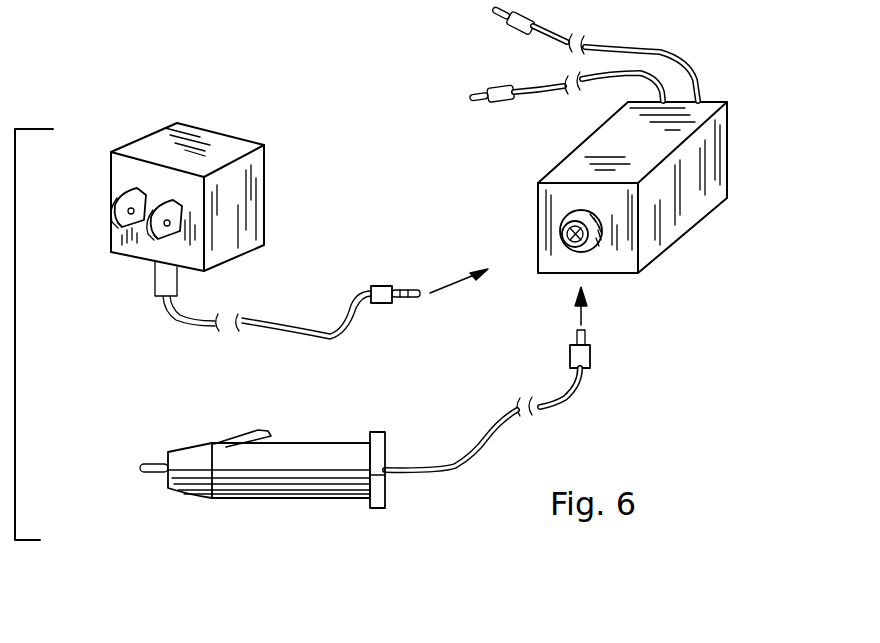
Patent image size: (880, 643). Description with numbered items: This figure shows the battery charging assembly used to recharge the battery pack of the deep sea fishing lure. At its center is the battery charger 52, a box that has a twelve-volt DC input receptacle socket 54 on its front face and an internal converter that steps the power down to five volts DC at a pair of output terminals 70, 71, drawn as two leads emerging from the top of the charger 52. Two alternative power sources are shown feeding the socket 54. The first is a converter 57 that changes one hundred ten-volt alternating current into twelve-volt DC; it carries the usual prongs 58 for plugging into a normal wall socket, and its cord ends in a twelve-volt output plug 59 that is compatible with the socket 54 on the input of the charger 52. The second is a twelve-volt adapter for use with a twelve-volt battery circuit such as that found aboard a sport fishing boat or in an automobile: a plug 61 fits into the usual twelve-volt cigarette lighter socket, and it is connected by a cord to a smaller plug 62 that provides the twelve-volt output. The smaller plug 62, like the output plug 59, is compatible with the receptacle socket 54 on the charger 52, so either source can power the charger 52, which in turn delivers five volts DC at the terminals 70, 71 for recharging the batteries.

The battery charger 52 is at (727, 165).
The input receptacle socket 54 is at (590, 228).
The converter 57 is at (264, 190).
The prongs 58 is at (114, 191).
The output plug 59 is at (378, 285).
The plug 61 is at (328, 443).
The smaller plug 62 is at (592, 357).
The output terminal 70 is at (687, 64).
The output terminal 71 is at (628, 76).